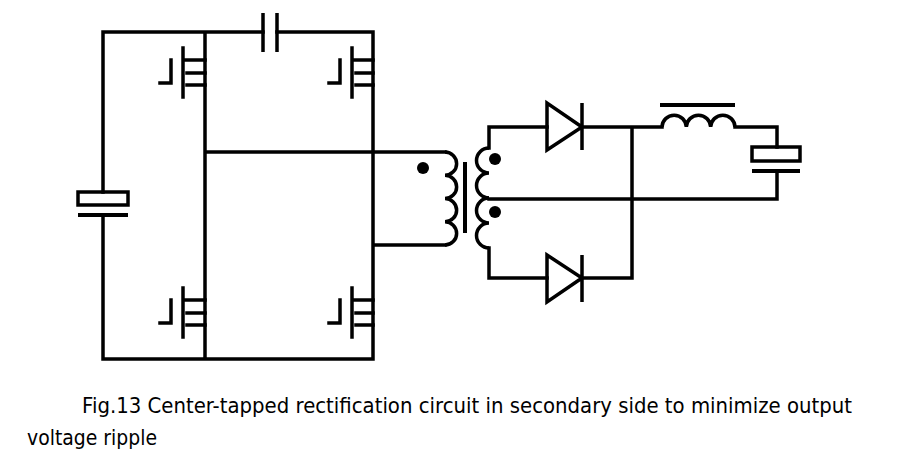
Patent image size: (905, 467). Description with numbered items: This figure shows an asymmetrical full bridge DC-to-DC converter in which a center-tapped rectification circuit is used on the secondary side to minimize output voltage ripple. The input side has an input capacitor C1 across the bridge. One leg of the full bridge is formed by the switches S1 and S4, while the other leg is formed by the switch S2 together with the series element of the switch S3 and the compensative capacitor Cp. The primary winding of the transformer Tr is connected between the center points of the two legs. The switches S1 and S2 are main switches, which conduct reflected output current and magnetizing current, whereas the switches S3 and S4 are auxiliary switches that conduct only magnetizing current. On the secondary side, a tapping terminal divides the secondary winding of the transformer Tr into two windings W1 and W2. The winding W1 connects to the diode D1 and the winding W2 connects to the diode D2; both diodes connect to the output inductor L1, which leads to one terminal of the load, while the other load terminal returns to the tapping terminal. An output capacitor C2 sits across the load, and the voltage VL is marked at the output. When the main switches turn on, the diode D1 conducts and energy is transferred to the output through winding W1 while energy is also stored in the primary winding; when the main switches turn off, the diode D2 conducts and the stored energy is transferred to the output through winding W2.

The input capacitor C1 is at (87, 227).
The compensative capacitor Cp is at (266, 52).
The first switching device S1 is at (171, 92).
The second switching device S2 is at (331, 301).
The third switching device S3 is at (342, 93).
The fourth switching device S4 is at (171, 301).
The transformer Tr is at (442, 176).
The first secondary winding W1 is at (512, 173).
The second secondary winding W2 is at (511, 224).
The first rectifier diode D1 is at (552, 104).
The second rectifier diode D2 is at (545, 307).
The output inductor L1 is at (697, 99).
The output capacitor C2 is at (774, 201).
The inductor voltage VL is at (654, 157).